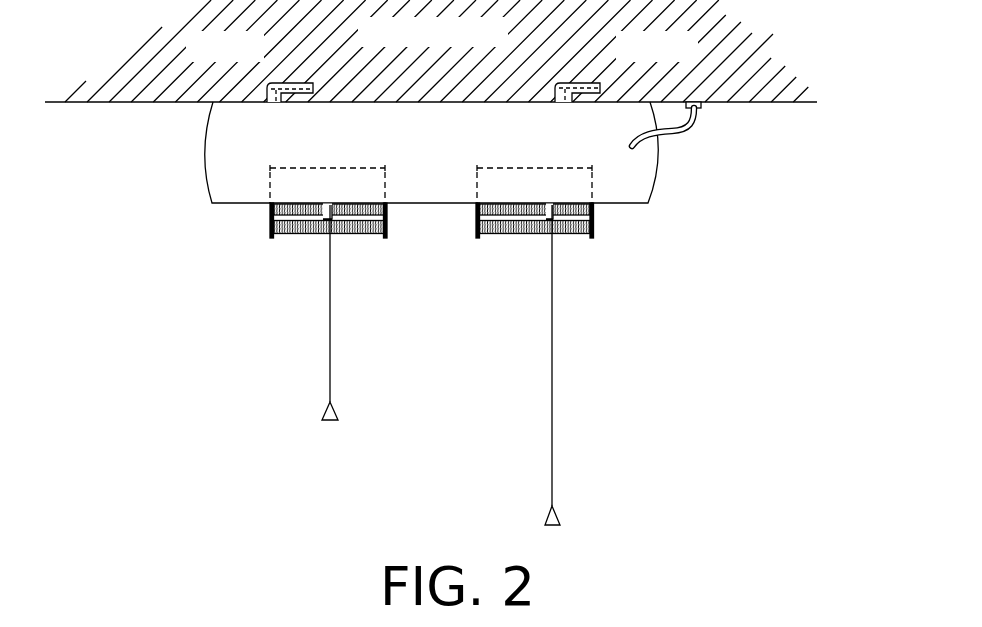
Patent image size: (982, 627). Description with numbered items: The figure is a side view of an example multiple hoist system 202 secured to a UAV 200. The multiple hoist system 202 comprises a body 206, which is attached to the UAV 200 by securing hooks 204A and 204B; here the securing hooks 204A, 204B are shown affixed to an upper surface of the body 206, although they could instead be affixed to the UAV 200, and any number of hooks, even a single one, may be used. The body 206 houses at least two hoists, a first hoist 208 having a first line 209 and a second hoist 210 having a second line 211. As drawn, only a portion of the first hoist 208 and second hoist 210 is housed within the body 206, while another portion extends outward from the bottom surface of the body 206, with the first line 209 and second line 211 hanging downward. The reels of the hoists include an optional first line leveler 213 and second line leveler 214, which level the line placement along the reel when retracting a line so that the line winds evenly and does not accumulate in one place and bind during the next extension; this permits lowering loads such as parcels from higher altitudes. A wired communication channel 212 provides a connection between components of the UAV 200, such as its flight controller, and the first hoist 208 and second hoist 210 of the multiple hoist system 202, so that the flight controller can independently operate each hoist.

The UAV 200 is at (140, 102).
The multiple hoist system 202 is at (496, 313).
The securing hook 204A is at (297, 82).
The securing hook 204B is at (583, 82).
The body 206 is at (227, 190).
The first hoist 208 is at (387, 227).
The first line 209 is at (330, 340).
The second hoist 210 is at (593, 227).
The second line 211 is at (552, 340).
The wired communication channel 212 is at (687, 130).
The first line leveler 213 is at (320, 217).
The second line leveler 214 is at (545, 217).